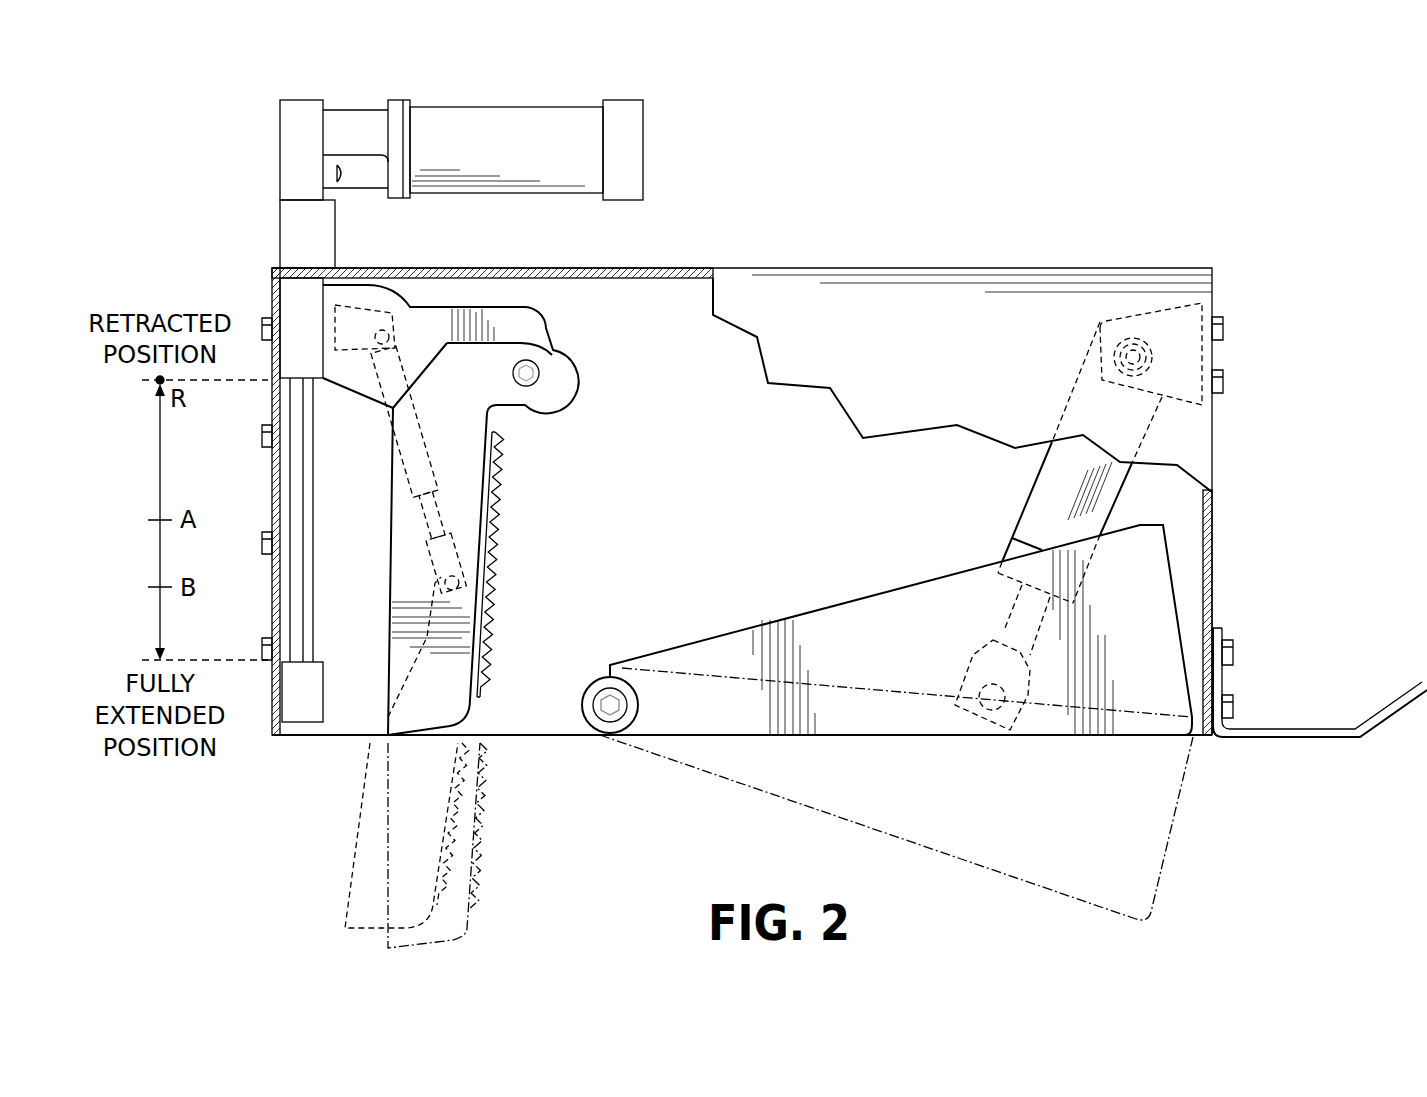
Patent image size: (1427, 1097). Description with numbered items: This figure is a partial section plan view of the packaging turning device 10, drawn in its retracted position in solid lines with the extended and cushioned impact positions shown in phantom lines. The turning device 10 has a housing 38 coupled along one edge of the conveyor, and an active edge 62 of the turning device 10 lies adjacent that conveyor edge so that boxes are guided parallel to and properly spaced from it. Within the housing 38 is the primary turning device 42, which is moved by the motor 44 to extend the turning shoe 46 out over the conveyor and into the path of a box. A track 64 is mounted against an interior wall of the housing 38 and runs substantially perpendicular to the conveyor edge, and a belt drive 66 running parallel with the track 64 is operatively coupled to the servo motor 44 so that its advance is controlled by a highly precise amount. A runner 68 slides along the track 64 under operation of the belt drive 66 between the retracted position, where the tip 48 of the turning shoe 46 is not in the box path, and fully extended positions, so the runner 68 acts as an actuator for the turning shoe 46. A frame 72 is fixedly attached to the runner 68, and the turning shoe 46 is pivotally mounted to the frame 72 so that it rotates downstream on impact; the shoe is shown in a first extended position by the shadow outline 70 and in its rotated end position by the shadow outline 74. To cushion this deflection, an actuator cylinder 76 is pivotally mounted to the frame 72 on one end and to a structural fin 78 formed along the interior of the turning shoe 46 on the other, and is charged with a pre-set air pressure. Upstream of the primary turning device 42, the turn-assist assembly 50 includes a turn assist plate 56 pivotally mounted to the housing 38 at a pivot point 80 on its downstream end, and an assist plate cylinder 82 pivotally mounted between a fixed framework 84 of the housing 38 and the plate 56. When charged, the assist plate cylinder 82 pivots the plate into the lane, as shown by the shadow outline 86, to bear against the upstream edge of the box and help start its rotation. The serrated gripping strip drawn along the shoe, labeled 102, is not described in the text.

The turning device 10 is at (895, 188).
The housing 38 is at (998, 366).
The primary turning device 42 is at (545, 488).
The motor 44 is at (510, 103).
The turning shoe 46 is at (388, 553).
The tip 48 is at (433, 737).
The turn-assist assembly 50 is at (860, 575).
The turn assist plate 56 is at (1035, 738).
The active edge 62 is at (560, 748).
The track 64 is at (292, 488).
The belt drive 66 is at (315, 617).
The runner 68 is at (292, 300).
The shadow outline 70 is at (455, 940).
The frame 72 is at (520, 304).
The shadow outline 74 is at (360, 930).
The actuator cylinder 76 is at (395, 488).
The structural fin 78 is at (412, 662).
The pivot point 80 is at (600, 688).
The assist plate cylinder 82 is at (1030, 478).
The fixed framework 84 is at (1212, 357).
The shadow outline 86 is at (1175, 815).
The serrated gripping bar 102 is at (497, 575).